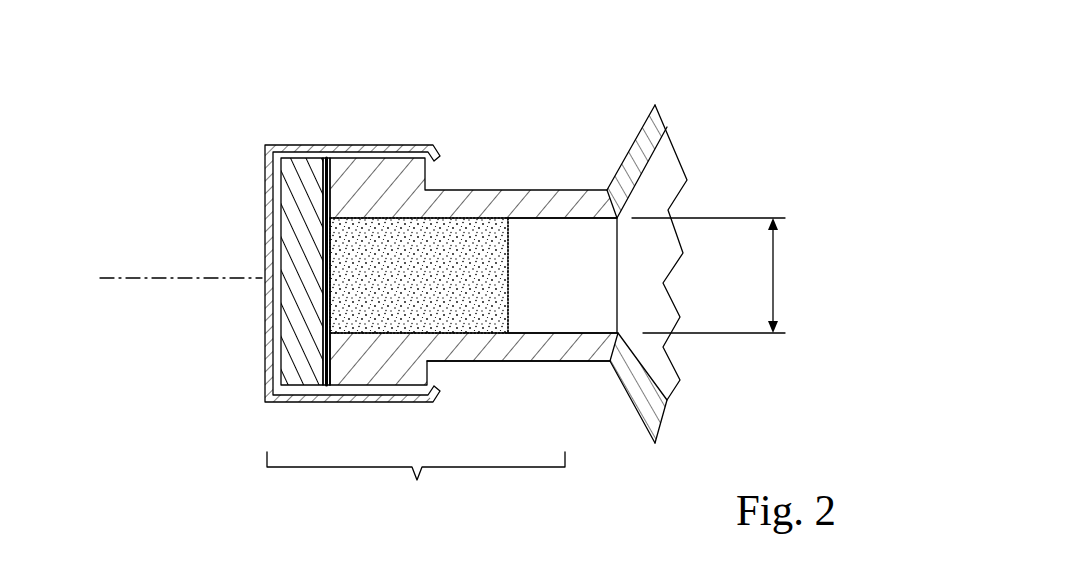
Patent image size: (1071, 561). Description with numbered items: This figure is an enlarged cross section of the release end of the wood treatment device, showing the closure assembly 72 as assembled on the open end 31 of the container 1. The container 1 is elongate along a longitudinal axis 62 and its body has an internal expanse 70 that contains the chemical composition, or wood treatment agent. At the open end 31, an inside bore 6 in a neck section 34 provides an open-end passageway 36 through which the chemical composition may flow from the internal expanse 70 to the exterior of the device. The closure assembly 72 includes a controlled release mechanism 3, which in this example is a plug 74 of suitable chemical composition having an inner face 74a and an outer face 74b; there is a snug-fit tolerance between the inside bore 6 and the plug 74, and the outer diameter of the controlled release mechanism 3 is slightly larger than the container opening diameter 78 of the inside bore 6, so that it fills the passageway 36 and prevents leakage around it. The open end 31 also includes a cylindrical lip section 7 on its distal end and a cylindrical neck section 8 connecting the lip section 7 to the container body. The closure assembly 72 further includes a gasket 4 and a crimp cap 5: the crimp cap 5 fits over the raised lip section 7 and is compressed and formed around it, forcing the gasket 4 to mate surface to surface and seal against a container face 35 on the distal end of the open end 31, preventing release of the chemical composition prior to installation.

The container 1 is at (636, 130).
The controlled release mechanism 3 is at (518, 278).
The gasket 4 is at (300, 167).
The crimp cap 5 is at (265, 240).
The inside bore 6 is at (548, 218).
The lip section 7 is at (355, 158).
The neck section 8 is at (566, 128).
The open end 31 is at (416, 487).
The neck section 34 is at (506, 368).
The container face 35 is at (316, 366).
The open-end passageway 36 is at (580, 257).
The longitudinal axis 62 is at (137, 278).
The internal expanse 70 is at (640, 316).
The closure assembly 72 is at (216, 138).
The plug 74 is at (422, 233).
The inner face 74a is at (508, 302).
The outer face 74b is at (328, 303).
The container opening diameter 78 is at (776, 270).